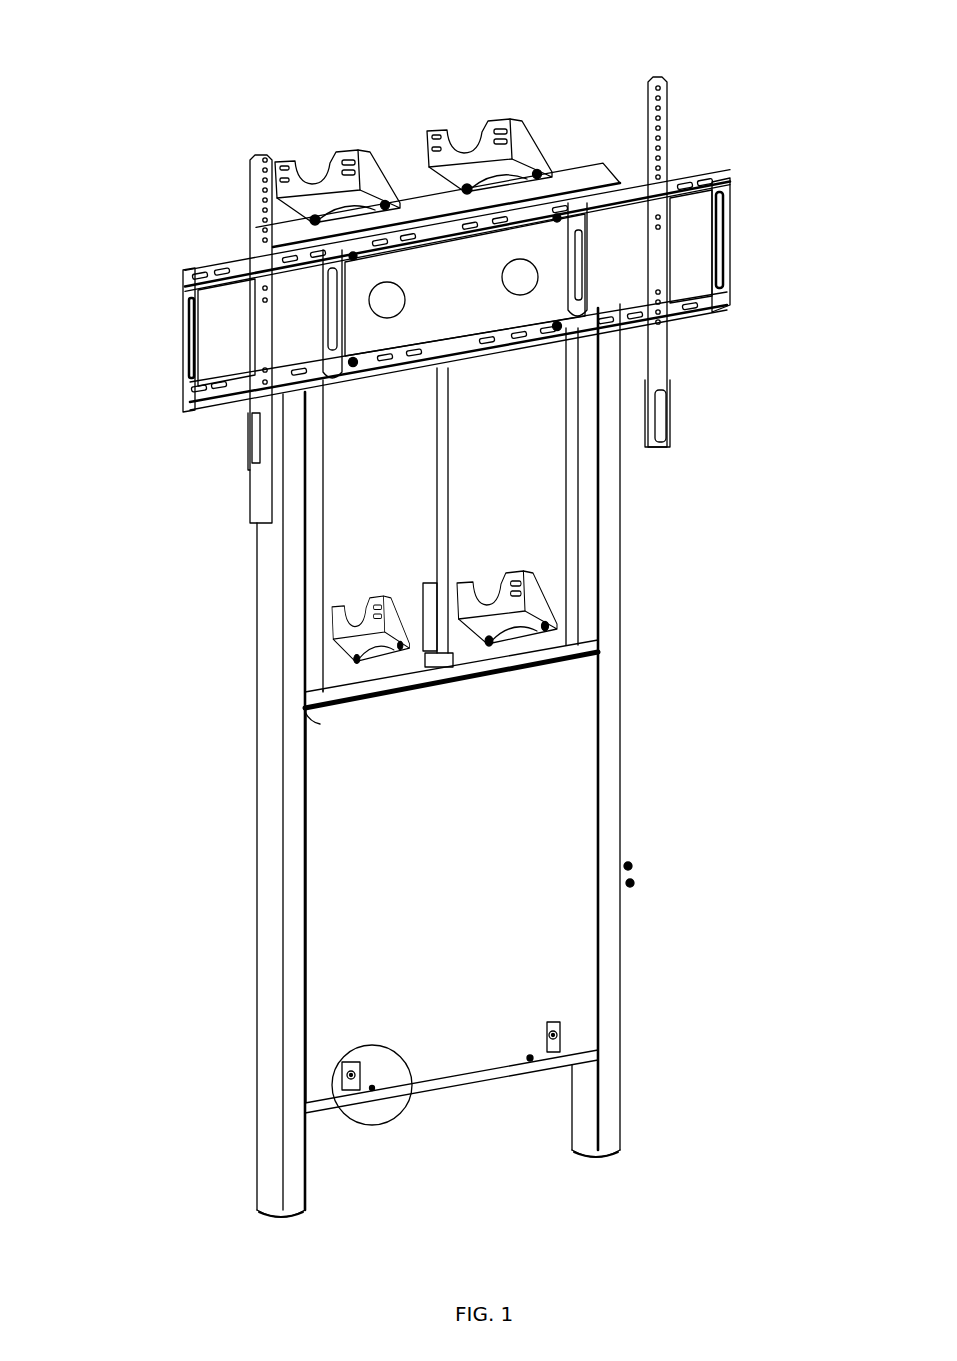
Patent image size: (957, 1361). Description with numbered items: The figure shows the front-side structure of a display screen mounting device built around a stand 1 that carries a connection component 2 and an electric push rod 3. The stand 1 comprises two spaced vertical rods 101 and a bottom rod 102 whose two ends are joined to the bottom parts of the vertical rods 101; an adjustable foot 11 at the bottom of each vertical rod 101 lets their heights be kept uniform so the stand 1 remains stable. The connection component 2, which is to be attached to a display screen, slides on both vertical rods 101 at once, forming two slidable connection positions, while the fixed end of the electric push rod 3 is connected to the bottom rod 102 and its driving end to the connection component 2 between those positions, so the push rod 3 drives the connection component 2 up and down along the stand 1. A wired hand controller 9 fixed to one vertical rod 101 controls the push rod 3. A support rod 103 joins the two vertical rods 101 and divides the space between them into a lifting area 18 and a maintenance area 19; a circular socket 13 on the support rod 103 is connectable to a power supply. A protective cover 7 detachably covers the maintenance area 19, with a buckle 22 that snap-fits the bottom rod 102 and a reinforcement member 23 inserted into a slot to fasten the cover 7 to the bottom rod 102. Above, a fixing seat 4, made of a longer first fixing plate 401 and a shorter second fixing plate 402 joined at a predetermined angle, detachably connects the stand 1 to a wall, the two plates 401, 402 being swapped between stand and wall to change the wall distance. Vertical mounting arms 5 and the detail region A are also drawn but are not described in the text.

The stand 1 is at (370, 1088).
The connection component 2 is at (617, 333).
The electric push rod 3 is at (435, 540).
The fixing seat 4 is at (535, 135).
The vertical mounting arm 5 is at (667, 125).
The protective cover 7 is at (597, 717).
The wired hand controller 9 is at (632, 883).
The adjustable foot 11 is at (275, 1215).
The circular socket 13 is at (585, 638).
The lifting area 18 is at (520, 497).
The maintenance area 19 is at (530, 820).
The buckle 22 is at (556, 1033).
The reinforcement member 23 is at (532, 1060).
The vertical rod 101 is at (612, 585).
The bottom rod 102 is at (407, 1097).
The support rod 103 is at (306, 727).
The first fixing plate 401 is at (370, 152).
The second fixing plate 402 is at (335, 182).
The detail region A is at (340, 1088).